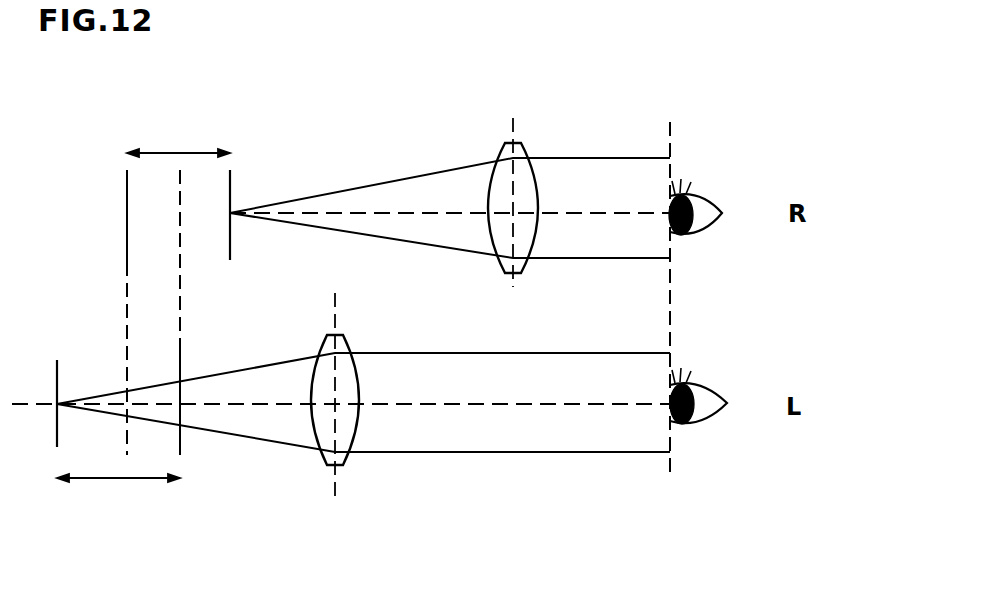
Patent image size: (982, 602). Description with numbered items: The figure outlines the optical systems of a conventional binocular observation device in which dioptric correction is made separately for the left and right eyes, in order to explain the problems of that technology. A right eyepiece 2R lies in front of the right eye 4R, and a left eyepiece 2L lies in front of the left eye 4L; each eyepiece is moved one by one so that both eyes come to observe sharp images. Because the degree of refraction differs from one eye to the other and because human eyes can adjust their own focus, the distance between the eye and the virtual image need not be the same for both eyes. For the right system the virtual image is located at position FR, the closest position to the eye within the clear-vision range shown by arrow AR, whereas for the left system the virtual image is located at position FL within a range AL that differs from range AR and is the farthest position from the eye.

The right eyepiece 2R is at (522, 150).
The left eyepiece 2L is at (342, 460).
The right eye 4R is at (710, 200).
The left eye 4L is at (700, 425).
The virtual image position FR is at (237, 235).
The virtual image position FL is at (39, 388).
The clear-vision range AR is at (178, 140).
The clear-vision range AL is at (118, 494).